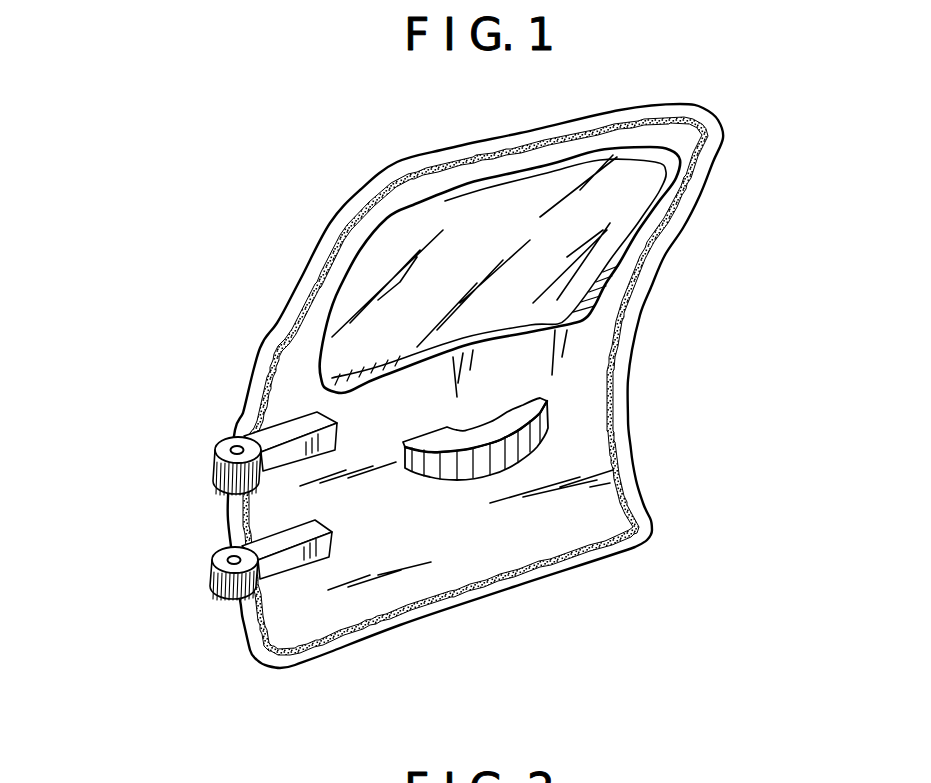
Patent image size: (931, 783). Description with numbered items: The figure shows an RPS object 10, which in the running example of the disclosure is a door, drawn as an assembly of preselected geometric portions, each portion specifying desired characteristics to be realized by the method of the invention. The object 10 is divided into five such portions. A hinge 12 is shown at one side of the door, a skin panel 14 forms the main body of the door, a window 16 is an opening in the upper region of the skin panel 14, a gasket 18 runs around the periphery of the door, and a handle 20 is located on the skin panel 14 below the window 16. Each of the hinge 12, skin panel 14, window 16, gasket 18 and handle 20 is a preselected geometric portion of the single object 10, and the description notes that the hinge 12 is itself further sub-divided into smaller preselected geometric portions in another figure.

The RPS object 10 is at (443, 443).
The hinge 12 is at (212, 565).
The skin panel 14 is at (270, 322).
The window 16 is at (590, 215).
The gasket 18 is at (717, 150).
The handle 20 is at (513, 457).